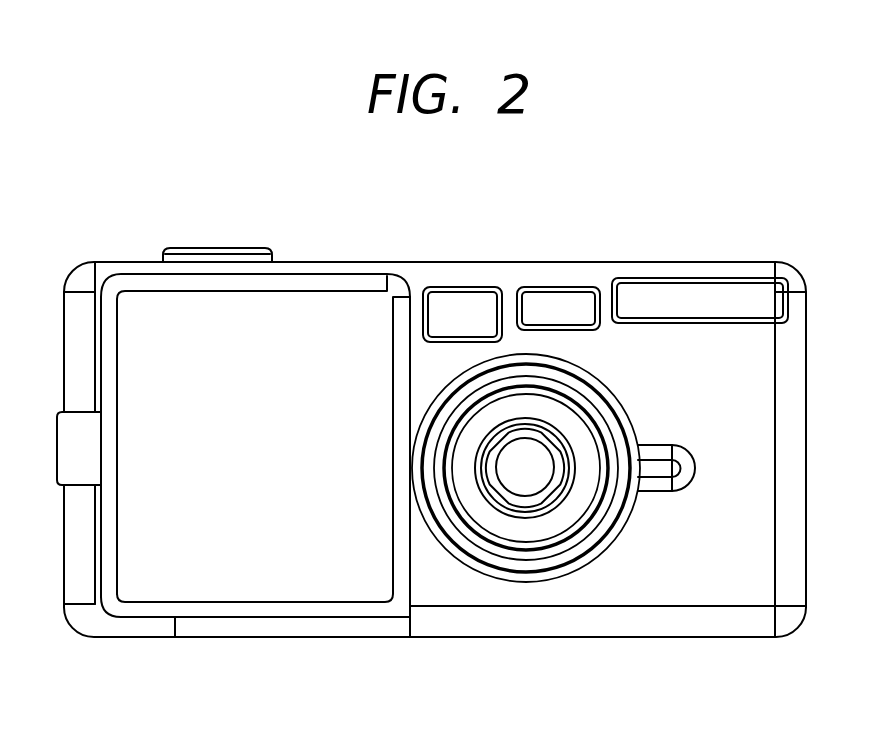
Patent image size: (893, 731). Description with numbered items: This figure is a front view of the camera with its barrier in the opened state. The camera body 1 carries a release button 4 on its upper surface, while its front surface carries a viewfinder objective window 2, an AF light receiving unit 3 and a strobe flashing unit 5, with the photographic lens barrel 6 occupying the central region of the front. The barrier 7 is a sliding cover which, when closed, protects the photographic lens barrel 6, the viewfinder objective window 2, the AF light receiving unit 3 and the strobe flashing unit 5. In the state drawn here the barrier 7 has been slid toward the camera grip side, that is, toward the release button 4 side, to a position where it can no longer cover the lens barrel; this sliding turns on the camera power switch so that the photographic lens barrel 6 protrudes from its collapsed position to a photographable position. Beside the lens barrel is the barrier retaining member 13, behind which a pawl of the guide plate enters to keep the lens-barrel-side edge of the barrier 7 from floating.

The camera body 1 is at (517, 272).
The viewfinder objective window 2 is at (443, 298).
The AF light receiving unit 3 is at (575, 298).
The release button 4 is at (226, 248).
The strobe flashing unit 5 is at (717, 292).
The photographic lens barrel 6 is at (543, 533).
The barrier 7 is at (262, 585).
The barrier retaining member 13 is at (653, 485).